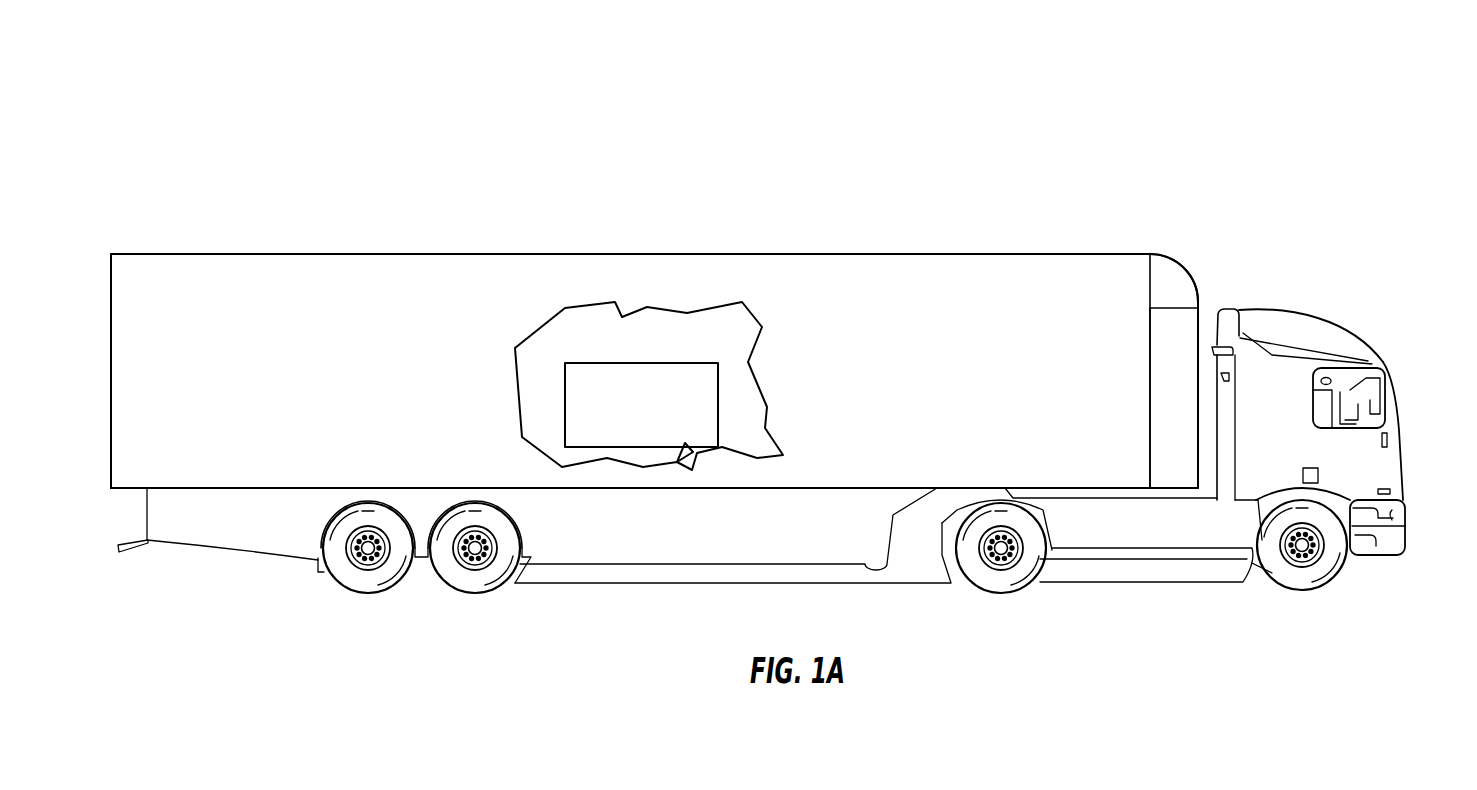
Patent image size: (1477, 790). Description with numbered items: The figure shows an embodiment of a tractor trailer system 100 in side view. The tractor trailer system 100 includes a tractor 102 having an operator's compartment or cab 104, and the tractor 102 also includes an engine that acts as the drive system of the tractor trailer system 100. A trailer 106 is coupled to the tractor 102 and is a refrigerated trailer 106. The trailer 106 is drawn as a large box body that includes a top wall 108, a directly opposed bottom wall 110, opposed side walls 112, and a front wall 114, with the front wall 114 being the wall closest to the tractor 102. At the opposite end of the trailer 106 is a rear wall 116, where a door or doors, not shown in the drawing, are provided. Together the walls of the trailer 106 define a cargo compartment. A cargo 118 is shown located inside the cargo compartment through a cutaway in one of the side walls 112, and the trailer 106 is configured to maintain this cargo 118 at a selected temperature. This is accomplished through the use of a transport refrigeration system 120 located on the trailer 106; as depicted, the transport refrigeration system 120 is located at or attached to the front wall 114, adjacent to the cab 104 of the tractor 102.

The tractor trailer system 100 is at (397, 142).
The tractor 102 is at (1420, 574).
The cab 104 is at (1368, 382).
The trailer 106 is at (293, 300).
The top wall 108 is at (860, 254).
The bottom wall 110 is at (613, 489).
The side walls 112 is at (896, 383).
The front wall 114 is at (1152, 384).
The rear wall 116 is at (110, 277).
The cargo 118 is at (679, 428).
The transport refrigeration system 120 is at (1172, 449).